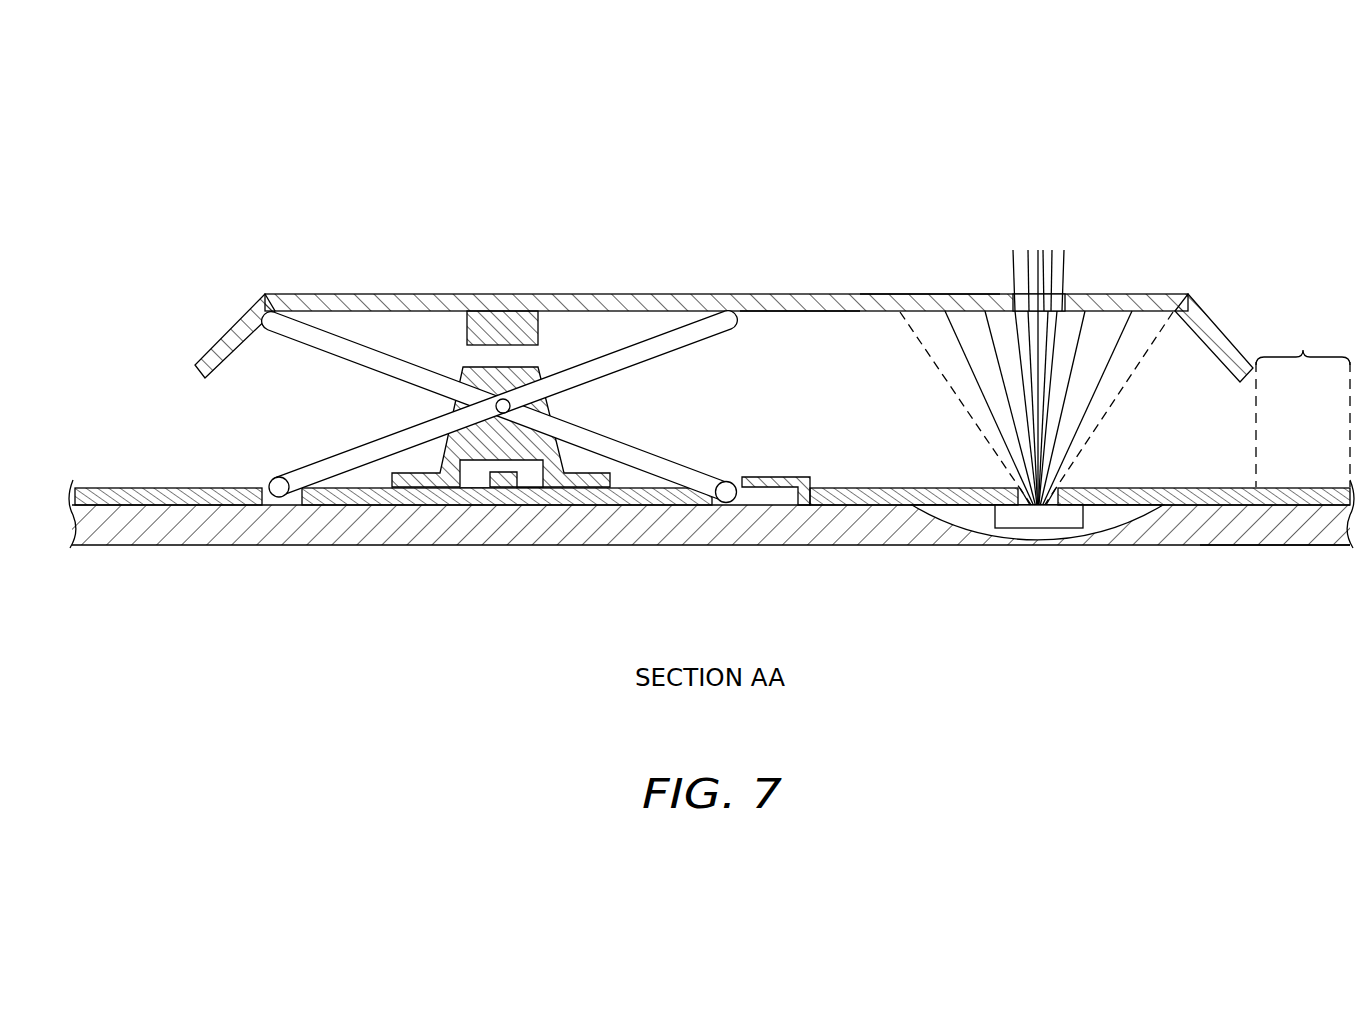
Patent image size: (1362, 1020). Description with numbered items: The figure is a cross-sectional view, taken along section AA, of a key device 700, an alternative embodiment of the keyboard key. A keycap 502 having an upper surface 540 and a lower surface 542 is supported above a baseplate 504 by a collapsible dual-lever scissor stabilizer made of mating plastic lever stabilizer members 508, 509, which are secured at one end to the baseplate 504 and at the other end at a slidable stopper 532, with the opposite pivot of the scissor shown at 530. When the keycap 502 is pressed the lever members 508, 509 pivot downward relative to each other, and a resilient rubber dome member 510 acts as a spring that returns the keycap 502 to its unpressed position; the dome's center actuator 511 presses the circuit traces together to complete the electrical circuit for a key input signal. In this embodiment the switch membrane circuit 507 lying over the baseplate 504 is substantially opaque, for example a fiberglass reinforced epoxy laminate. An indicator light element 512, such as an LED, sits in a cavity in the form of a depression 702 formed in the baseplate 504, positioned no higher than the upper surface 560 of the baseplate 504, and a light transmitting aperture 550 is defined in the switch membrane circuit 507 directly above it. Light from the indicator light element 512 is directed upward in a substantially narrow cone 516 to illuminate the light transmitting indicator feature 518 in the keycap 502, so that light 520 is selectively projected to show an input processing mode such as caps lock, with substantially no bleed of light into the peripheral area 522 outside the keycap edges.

The key device 700 is at (208, 124).
The keycap 502 is at (398, 296).
The baseplate 504 is at (165, 540).
The switch membrane circuit 507 is at (120, 487).
The lever stabilizer member 508 is at (330, 346).
The lever stabilizer member 509 is at (355, 455).
The rubber dome member 510 is at (505, 370).
The center actuator 511 is at (503, 464).
The indicator light element 512 is at (1052, 515).
The narrow cone 516 is at (1107, 372).
The light transmitting indicator feature 518 is at (1045, 304).
The light 520 is at (1013, 254).
The peripheral area 522 is at (1303, 404).
The pivot joint 530 is at (268, 480).
The slidable stopper 532 is at (726, 483).
The upper surface 540 is at (910, 295).
The lower surface 542 is at (777, 313).
The light transmitting aperture 550 is at (1053, 478).
The upper surface 560 is at (1252, 530).
The depression 702 is at (955, 510).